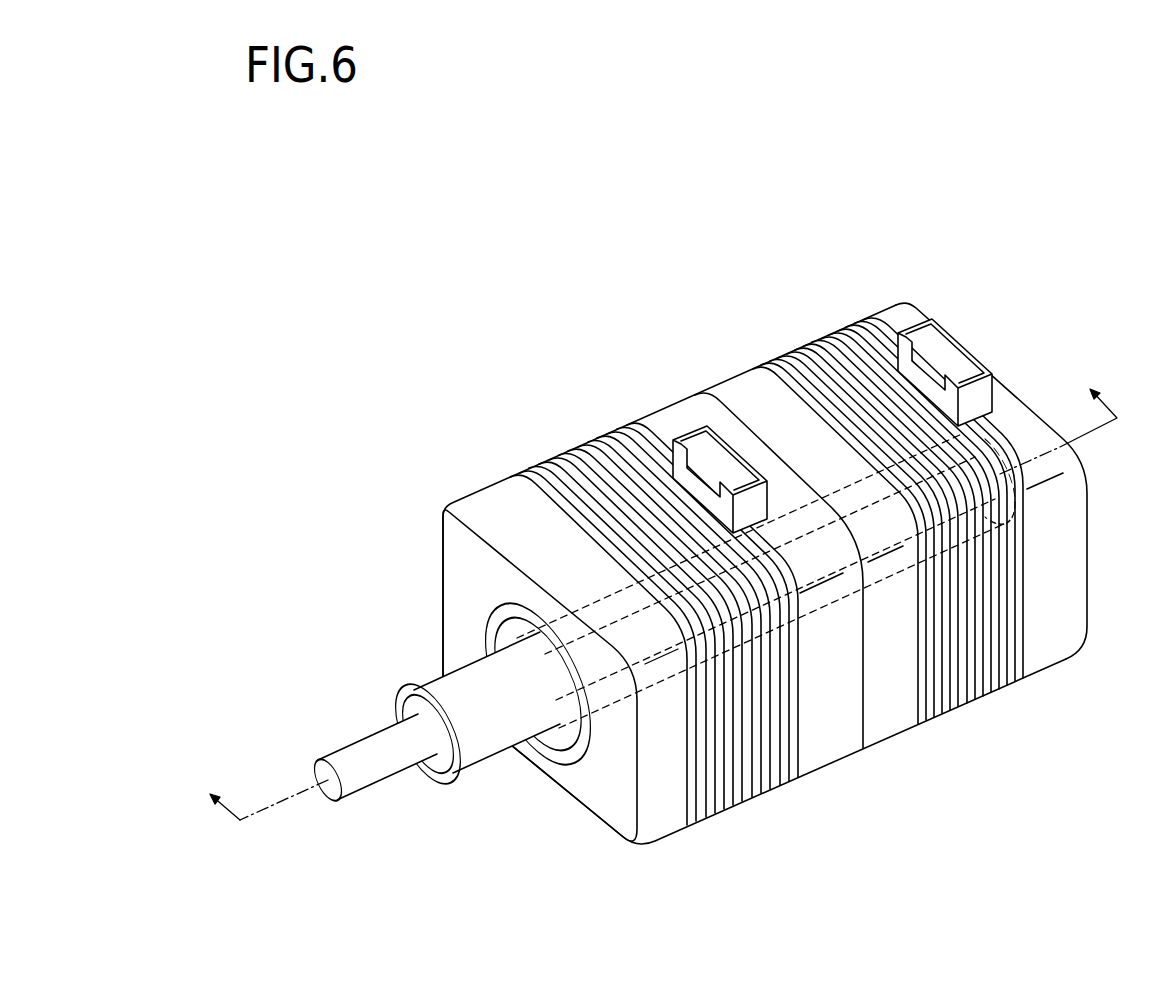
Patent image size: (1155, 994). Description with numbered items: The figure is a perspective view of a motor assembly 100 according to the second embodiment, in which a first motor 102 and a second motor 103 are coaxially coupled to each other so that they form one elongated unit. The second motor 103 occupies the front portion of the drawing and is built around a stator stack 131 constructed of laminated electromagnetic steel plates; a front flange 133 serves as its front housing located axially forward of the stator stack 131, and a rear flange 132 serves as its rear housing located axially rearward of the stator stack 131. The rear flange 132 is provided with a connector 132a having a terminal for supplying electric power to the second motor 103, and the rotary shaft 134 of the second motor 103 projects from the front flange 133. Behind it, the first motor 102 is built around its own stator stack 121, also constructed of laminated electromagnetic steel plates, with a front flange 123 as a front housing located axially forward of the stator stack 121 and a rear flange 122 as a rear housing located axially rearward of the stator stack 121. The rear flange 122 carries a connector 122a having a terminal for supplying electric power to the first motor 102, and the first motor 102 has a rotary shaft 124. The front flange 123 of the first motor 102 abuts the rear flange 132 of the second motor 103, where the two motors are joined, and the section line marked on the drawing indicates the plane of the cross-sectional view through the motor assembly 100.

The motor assembly 100 is at (654, 573).
The first motor 102 is at (791, 573).
The second motor 103 is at (654, 603).
The stator stack 121 is at (980, 693).
The rear flange 122 is at (1052, 650).
The connector 122a is at (950, 357).
The front flange 123 is at (900, 717).
The rotary shaft 124 is at (358, 748).
The stator stack 131 is at (763, 793).
The rear flange 132 is at (827, 750).
The connector 132a is at (720, 455).
The front flange 133 is at (668, 820).
The rotary shaft 134 is at (438, 688).